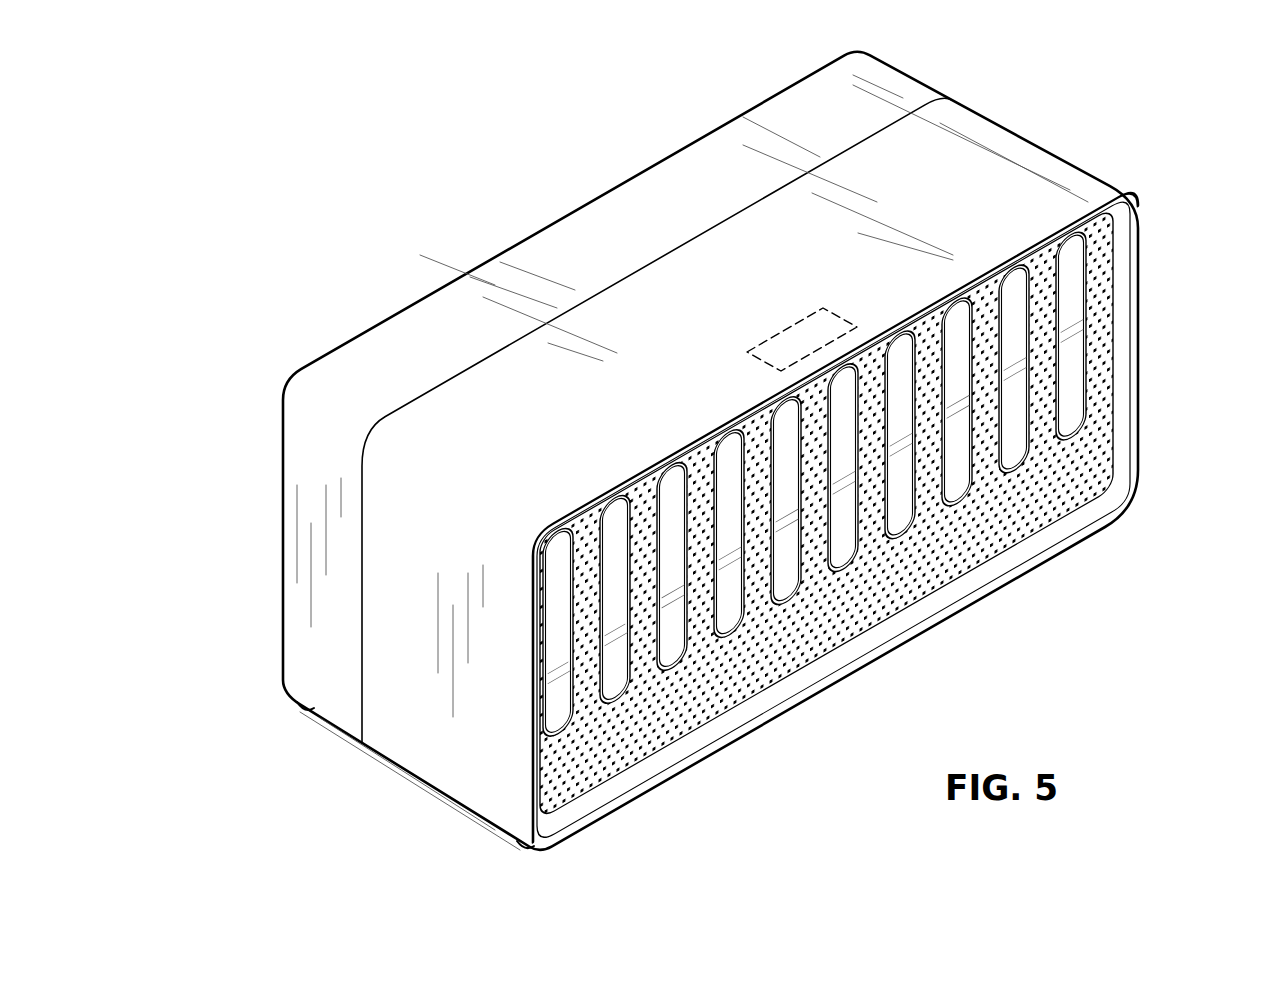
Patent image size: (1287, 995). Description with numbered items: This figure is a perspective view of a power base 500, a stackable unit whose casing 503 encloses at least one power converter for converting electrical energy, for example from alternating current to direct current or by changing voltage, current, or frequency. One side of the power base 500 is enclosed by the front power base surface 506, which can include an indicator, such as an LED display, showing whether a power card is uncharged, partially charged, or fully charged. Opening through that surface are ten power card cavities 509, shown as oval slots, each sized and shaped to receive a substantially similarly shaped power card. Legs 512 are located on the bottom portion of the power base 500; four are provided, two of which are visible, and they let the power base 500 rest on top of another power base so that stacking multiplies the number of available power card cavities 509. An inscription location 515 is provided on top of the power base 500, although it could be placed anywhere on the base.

The power base 500 is at (1076, 104).
The casing 503 is at (392, 499).
The front power base surface 506 is at (1080, 458).
The power card cavity 509 is at (1067, 333).
The legs 512 is at (300, 703).
The inscription location 515 is at (795, 333).